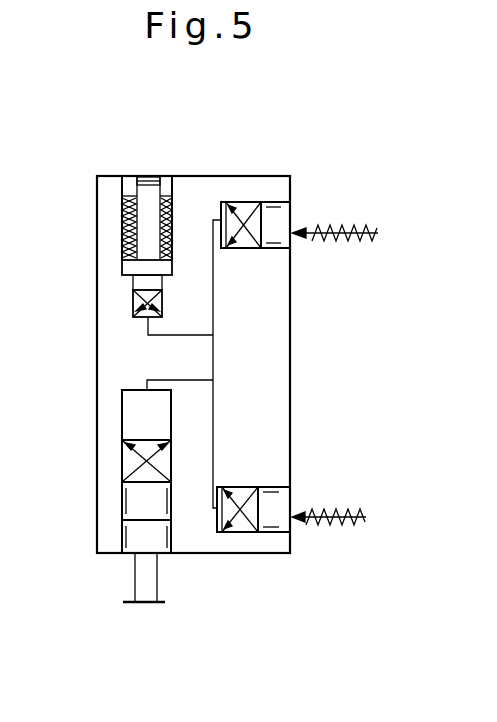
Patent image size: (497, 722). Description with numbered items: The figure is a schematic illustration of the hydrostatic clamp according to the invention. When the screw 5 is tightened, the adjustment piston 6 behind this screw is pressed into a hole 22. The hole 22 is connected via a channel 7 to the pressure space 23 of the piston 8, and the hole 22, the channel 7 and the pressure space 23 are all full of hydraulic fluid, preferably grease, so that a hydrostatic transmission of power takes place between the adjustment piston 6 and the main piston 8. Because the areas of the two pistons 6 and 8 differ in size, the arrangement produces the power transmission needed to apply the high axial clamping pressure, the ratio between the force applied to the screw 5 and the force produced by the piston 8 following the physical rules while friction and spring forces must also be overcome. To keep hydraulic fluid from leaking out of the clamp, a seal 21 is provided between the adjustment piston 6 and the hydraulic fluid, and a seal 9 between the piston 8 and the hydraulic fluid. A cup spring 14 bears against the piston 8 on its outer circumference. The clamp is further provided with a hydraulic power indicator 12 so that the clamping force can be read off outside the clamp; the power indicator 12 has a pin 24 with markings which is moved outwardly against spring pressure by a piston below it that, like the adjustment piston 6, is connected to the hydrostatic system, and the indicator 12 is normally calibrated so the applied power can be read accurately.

The screw 5 is at (141, 605).
The adjustment piston 6 is at (130, 507).
The channel 7 is at (215, 380).
The piston 8 is at (285, 223).
The seal 9 is at (257, 208).
The hydraulic power indicator 12 is at (127, 168).
The cup spring 14 is at (362, 229).
The seal 21 is at (130, 463).
The hole 22 is at (128, 410).
The pressure space 23 is at (225, 203).
The pin 24 is at (155, 213).